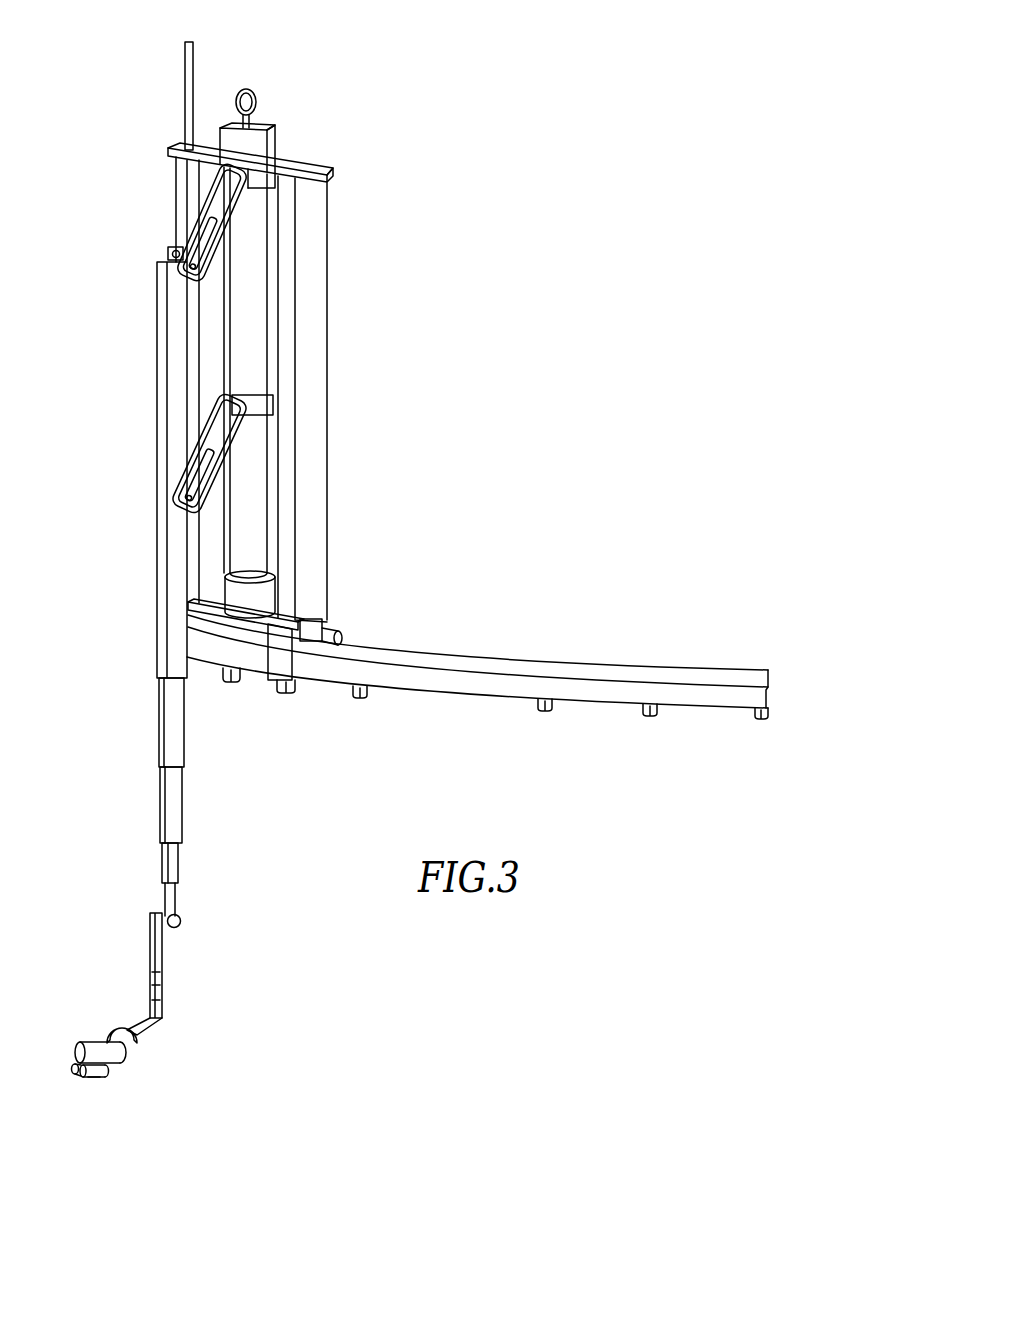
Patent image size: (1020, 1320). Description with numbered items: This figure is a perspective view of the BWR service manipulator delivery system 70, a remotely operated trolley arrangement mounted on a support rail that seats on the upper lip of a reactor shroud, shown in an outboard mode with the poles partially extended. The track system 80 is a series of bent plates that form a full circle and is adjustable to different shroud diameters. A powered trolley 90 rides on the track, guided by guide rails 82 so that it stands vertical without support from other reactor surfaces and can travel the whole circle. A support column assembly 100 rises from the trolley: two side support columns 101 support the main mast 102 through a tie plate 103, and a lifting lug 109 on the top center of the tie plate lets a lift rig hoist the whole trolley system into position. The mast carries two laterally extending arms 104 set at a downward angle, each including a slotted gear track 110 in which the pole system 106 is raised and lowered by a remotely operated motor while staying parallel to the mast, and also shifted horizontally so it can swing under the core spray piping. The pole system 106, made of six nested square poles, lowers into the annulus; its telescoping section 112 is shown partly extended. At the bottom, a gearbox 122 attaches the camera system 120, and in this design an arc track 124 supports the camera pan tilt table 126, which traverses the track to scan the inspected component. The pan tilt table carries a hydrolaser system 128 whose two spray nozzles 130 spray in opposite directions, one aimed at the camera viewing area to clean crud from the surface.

The service manipulator delivery system 70 is at (446, 305).
The track system 80 is at (580, 645).
The guide rails 82 is at (291, 672).
The powered trolley 90 is at (345, 610).
The support column assembly 100 is at (346, 176).
The side support column 101 is at (183, 178).
The main mast 102 is at (268, 314).
The tie plate 103 is at (288, 162).
The laterally extending arms 104 is at (220, 255).
The pole system 106 is at (165, 424).
The lifting lug 109 is at (256, 90).
The slotted gear track 110 is at (207, 220).
The telescoping column 112 is at (200, 737).
The camera system 120 is at (150, 1052).
The gearbox 122 is at (185, 915).
The arc track 124 is at (122, 1025).
The camera pan tilt table 126 is at (123, 1062).
The hydrolaser system 128 is at (112, 1100).
The spray nozzles 130 is at (80, 1074).